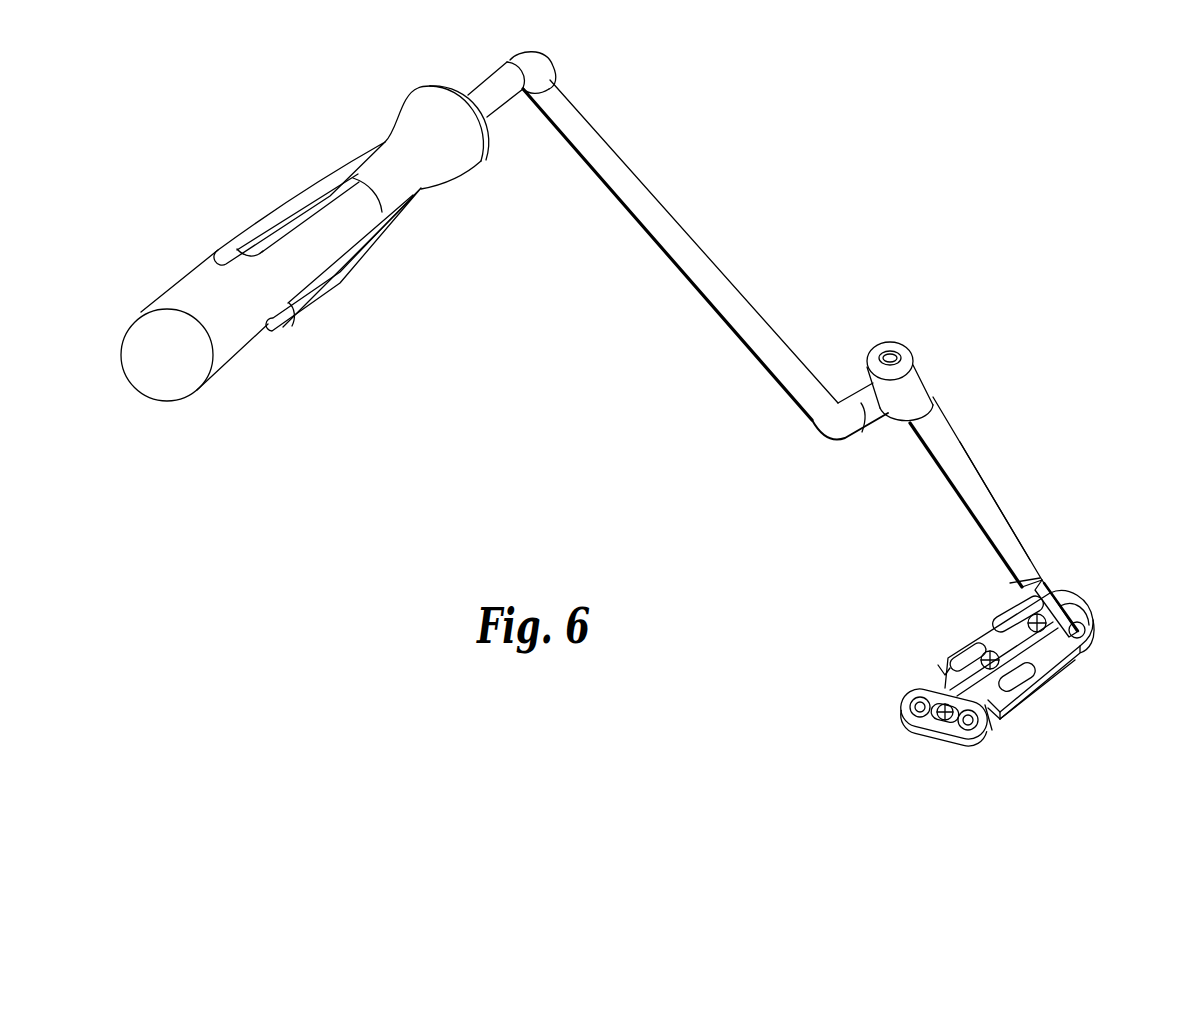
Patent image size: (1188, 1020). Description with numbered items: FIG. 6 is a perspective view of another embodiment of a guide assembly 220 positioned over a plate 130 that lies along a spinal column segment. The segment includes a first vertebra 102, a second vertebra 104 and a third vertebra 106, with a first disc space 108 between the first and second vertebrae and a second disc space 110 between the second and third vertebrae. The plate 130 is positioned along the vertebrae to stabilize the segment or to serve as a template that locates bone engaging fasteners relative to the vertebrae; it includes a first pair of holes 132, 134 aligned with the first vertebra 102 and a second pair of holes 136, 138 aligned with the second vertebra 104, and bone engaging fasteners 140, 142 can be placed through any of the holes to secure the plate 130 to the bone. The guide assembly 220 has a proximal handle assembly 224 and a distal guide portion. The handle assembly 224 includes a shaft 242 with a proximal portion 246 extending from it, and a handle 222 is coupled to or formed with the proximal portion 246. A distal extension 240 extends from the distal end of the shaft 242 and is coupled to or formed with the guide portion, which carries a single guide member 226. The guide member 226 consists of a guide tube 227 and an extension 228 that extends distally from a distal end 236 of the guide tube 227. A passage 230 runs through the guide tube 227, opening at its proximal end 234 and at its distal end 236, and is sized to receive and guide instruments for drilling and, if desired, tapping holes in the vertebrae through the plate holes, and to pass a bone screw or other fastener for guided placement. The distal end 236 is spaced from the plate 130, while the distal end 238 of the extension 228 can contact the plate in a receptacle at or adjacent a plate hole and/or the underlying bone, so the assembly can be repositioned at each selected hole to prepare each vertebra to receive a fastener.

The first vertebra 102 is at (1093, 677).
The second vertebra 104 is at (1030, 715).
The third vertebra 106 is at (987, 757).
The first disc space 108 is at (1067, 685).
The second disc space 110 is at (1003, 730).
The plate 130 is at (937, 662).
The hole 132 is at (1000, 612).
The hole 134 is at (1085, 638).
The hole 136 is at (962, 652).
The hole 138 is at (1028, 697).
The bone screw 140 is at (900, 705).
The bone engaging fastener 142 is at (953, 738).
The instrument 220 is at (490, 353).
The handle 222 is at (197, 280).
The proximal handle assembly 224 is at (633, 109).
The guide member 226 is at (1016, 510).
The guide tube 227 is at (967, 447).
The extension 228 is at (1058, 585).
The passage 230 is at (877, 360).
The proximal end 234 is at (899, 342).
The distal end 236 is at (1005, 593).
The distal end 238 is at (1090, 640).
The distal extension 240 is at (870, 414).
The shaft 242 is at (677, 213).
The proximal portion 246 is at (481, 83).